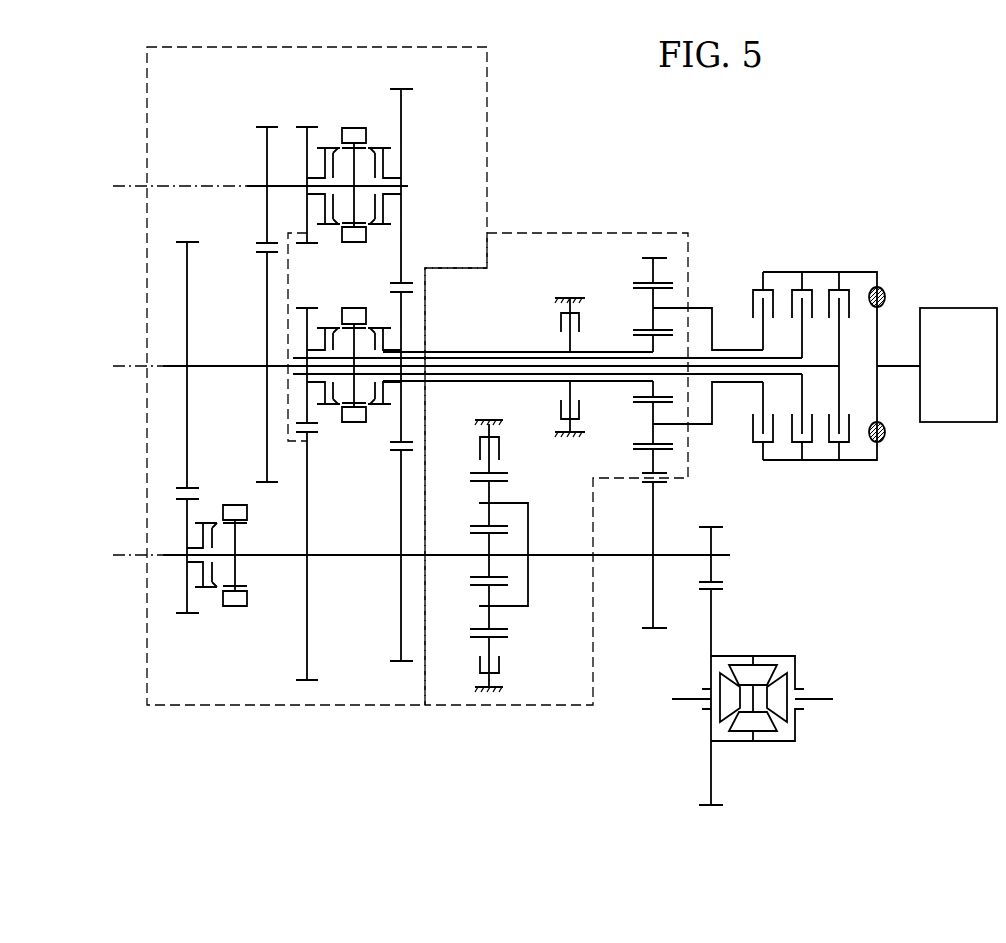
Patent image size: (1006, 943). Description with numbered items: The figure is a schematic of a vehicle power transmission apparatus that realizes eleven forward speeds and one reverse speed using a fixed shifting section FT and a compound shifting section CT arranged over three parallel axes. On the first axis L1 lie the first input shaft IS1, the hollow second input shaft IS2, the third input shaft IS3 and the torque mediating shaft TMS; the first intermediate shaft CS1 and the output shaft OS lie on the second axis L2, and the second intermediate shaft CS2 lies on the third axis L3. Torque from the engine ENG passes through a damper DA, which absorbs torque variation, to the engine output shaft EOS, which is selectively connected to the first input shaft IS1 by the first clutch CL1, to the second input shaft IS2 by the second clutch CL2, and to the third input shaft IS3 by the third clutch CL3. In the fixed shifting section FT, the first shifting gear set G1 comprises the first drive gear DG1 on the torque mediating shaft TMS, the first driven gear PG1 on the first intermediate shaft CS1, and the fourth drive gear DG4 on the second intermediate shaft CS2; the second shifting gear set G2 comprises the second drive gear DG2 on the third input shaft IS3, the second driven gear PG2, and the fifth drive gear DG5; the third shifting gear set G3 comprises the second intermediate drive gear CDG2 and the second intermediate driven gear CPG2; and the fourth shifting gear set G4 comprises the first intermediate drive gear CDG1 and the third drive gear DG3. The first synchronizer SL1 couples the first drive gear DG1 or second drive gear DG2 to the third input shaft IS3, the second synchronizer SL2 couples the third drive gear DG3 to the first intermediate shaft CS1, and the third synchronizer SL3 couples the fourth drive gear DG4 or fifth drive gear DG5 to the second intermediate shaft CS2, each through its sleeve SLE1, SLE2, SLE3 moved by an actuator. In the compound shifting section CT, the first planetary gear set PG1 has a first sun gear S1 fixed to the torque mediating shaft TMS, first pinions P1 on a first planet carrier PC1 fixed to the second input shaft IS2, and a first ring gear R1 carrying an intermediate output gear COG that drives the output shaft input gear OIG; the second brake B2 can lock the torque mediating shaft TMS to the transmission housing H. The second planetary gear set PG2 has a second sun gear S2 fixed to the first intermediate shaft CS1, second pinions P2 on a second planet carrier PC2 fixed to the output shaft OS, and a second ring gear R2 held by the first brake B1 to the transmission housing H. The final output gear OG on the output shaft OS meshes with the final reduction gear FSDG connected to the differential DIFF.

The fixed shifting section FT is at (142, 107).
The compound shifting section CT is at (593, 232).
The first axis L1 is at (191, 366).
The second axis L2 is at (410, 556).
The third axis L3 is at (168, 187).
The second intermediate driven gear CPG2 is at (267, 158).
The first intermediate drive gear CDG1 is at (188, 291).
The second intermediate drive gear CDG2 is at (267, 335).
The first drive gear DG1 is at (402, 314).
The second drive gear DG2 is at (307, 318).
The third drive gear DG3 is at (187, 602).
The fourth drive gear DG4 is at (402, 128).
The fifth drive gear DG5 is at (307, 137).
The first sleeve SLE1 is at (354, 422).
The second sleeve SLE2 is at (235, 606).
The third sleeve SLE3 is at (350, 128).
The first synchronizer SL1 is at (368, 438).
The second synchronizer SL2 is at (250, 620).
The third synchronizer SL3 is at (367, 118).
The first intermediate shaft CS1 is at (350, 557).
The second intermediate shaft CS2 is at (408, 186).
The torque mediating shaft TMS is at (511, 352).
The first input shaft IS1 is at (615, 375).
The second input shaft IS2 is at (733, 350).
The third input shaft IS3 is at (535, 376).
The first brake B1 is at (473, 673).
The second brake B2 is at (555, 318).
The transmission housing H is at (488, 420).
The first ring gear R1 is at (640, 281).
The first pinions P1 is at (653, 308).
The first sun gear S1 is at (650, 341).
The first planet carrier PC1 is at (712, 308).
The first planetary gear set PG1 is at (668, 270).
The second ring gear R2 is at (476, 473).
The second pinions P2 is at (480, 503).
The second sun gear S2 is at (478, 534).
The second planet carrier PC2 is at (528, 537).
The second planetary gear set PG2 is at (307, 601).
The first clutch CL1 is at (845, 290).
The second clutch CL2 is at (768, 290).
The third clutch CL3 is at (806, 290).
The damper DA is at (885, 290).
The engine output shaft EOS is at (898, 368).
The engine ENG is at (958, 365).
The intermediate output gear COG is at (668, 472).
The output shaft input gear OIG is at (653, 499).
The output shaft OS is at (676, 553).
The final output gear OG is at (713, 542).
The final reduction gear FSDG is at (712, 626).
The differential DIFF is at (797, 667).
The first shifting gear set G1 is at (401, 669).
The second shifting gear set G2 is at (305, 688).
The third shifting gear set G3 is at (268, 487).
The fourth shifting gear set G4 is at (196, 622).